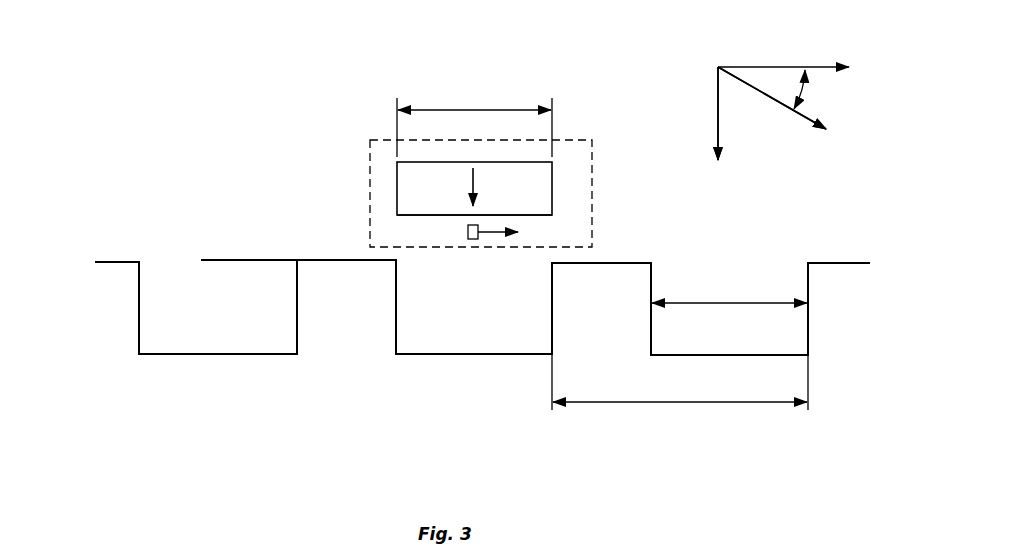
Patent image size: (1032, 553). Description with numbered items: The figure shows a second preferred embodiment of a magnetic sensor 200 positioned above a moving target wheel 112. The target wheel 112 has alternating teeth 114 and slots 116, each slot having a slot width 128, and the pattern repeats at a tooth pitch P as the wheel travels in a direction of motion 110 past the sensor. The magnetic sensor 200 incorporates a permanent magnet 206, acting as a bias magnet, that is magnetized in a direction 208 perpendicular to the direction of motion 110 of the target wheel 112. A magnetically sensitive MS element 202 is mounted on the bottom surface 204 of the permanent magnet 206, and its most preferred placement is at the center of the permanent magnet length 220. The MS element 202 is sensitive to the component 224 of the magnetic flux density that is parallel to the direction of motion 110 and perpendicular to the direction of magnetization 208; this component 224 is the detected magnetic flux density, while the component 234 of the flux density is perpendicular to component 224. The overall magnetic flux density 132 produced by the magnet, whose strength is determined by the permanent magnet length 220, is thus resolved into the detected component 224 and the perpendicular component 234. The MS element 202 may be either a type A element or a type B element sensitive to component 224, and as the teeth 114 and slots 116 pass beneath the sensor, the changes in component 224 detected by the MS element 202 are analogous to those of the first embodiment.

The direction of motion 110 is at (106, 308).
The teeth 114 is at (321, 260).
The slots 116 is at (243, 354).
The slot width 128 is at (735, 301).
The tooth pitch P is at (690, 403).
The magnetic sensor 200 is at (362, 132).
The permanent magnet 206 is at (397, 177).
The bottom surface 204 is at (412, 216).
The direction of magnetization 208 is at (476, 172).
The permanent magnet length 220 is at (480, 108).
The MS element 202 is at (461, 233).
The component of magnetic flux density 224 is at (490, 237).
The target wheel 112 is at (642, 220).
The component of magnetic flux density 234 is at (718, 82).
The magnetic flux density 132 is at (812, 126).
The angle between process and horizontal directions A is at (800, 90).